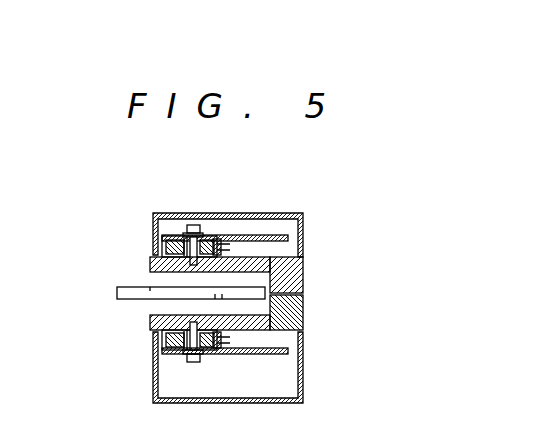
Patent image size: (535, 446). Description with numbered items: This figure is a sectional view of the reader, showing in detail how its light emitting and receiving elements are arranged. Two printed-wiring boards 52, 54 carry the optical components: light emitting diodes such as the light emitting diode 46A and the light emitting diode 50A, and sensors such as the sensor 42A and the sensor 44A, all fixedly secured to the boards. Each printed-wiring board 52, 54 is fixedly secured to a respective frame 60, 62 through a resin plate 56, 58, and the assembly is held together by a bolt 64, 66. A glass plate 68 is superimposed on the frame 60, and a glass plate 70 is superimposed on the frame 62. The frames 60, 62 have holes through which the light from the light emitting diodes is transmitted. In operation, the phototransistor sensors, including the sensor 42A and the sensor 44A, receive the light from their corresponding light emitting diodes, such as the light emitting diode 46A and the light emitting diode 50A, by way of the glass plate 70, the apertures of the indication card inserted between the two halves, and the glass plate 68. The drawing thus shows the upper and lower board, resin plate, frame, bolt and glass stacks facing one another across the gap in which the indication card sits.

The sensor 42A is at (170, 353).
The sensor 44A is at (228, 342).
The light emitting diode 46A is at (223, 246).
The light emitting diode 50A is at (155, 238).
The printed-wiring board 52 is at (270, 235).
The printed-wiring board 54 is at (278, 355).
The resin plate 56 is at (204, 238).
The resin plate 58 is at (205, 351).
The frame 60 is at (280, 275).
The frame 62 is at (280, 317).
The bolt 64 is at (192, 223).
The bolt 66 is at (200, 359).
The glass plate 68 is at (150, 266).
The glass plate 70 is at (165, 317).